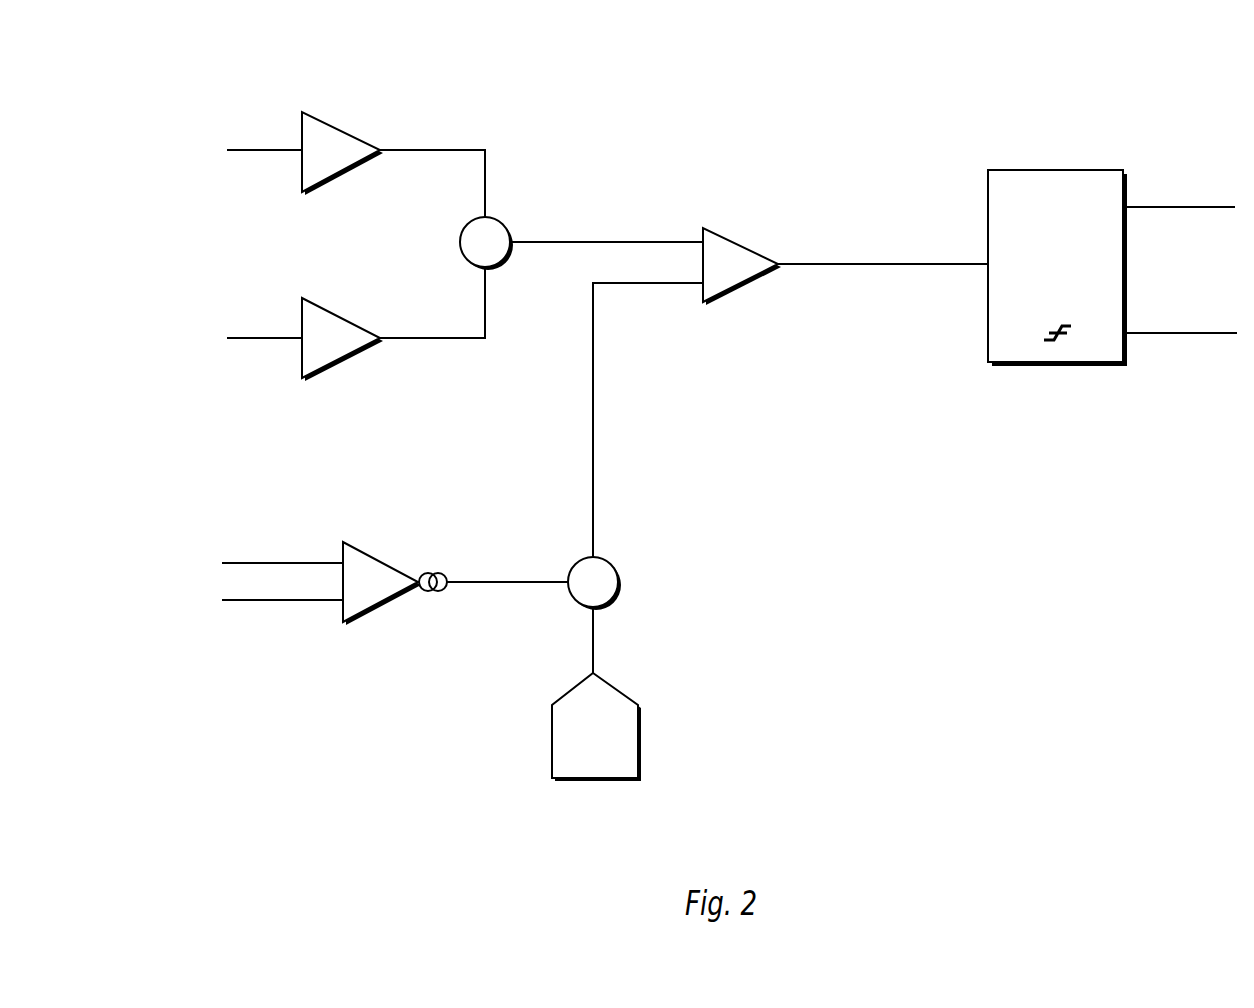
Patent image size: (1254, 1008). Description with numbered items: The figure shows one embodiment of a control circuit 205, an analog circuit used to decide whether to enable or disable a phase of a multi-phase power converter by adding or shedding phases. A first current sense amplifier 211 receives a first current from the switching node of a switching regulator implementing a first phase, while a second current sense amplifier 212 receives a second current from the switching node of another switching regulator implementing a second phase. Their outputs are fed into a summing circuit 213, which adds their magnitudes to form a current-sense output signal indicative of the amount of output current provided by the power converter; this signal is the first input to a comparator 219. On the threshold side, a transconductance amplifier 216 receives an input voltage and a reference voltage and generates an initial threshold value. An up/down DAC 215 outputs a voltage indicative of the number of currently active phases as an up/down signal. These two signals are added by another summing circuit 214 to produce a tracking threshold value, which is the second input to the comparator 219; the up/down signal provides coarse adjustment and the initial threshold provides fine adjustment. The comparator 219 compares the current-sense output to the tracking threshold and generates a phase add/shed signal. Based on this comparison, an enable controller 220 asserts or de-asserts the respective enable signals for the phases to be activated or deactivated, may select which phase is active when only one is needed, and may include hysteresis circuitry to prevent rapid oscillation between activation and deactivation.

The control circuit 205 is at (668, 42).
The first current sense amplifier 211 is at (330, 113).
The second current sense amplifier 212 is at (316, 298).
The summing circuit 213 is at (502, 212).
The summing circuit 214 is at (608, 555).
The Up/Dn DAC 215 is at (596, 727).
The transconductance amplifier 216 is at (357, 535).
The comparator 219 is at (731, 230).
The enable controller 220 is at (1057, 268).